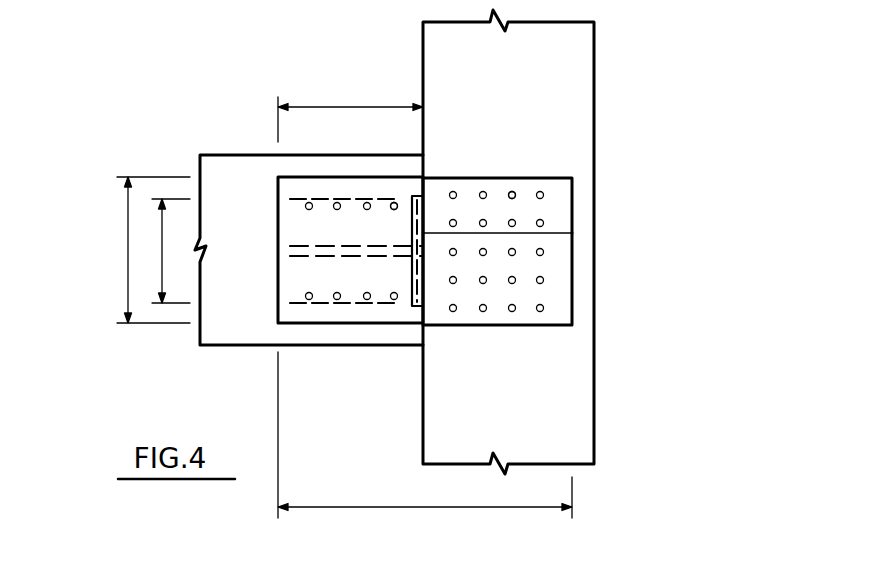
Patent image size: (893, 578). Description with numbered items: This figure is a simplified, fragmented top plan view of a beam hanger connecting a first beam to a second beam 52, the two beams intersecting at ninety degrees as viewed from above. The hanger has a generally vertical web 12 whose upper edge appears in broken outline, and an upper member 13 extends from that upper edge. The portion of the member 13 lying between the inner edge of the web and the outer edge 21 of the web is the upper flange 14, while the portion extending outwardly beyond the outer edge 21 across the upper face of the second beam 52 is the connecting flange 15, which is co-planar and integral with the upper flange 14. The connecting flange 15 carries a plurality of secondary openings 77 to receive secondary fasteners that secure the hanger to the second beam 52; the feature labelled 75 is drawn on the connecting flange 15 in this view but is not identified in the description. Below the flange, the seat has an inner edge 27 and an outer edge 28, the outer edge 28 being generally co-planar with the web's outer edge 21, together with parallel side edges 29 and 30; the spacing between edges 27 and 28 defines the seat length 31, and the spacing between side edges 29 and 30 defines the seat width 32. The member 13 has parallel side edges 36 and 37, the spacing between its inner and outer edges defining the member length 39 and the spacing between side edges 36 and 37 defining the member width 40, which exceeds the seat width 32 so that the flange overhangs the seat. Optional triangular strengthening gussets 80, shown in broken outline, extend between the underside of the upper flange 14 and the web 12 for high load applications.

The web 12 is at (296, 244).
The upper member 13 is at (517, 265).
The upper flange 14 is at (382, 313).
The connecting flange 15 is at (556, 212).
The outer edge of the web 21 is at (429, 246).
The inner edge of the seat 27 is at (278, 282).
The outer edge of the seat 28 is at (430, 305).
The side edge of the seat 29 is at (297, 197).
The side edge of the seat 30 is at (322, 306).
The length of the seat 31 is at (385, 107).
The width of the seat 32 is at (161, 247).
The side edge of the member 36 is at (403, 177).
The side edge of the member 37 is at (405, 325).
The length of the member 39 is at (488, 507).
The width of the member 40 is at (128, 247).
The second beam 52 is at (597, 407).
The bolt 75 is at (448, 178).
The secondary openings 77 is at (513, 194).
The strengthening gussets 80 is at (394, 200).